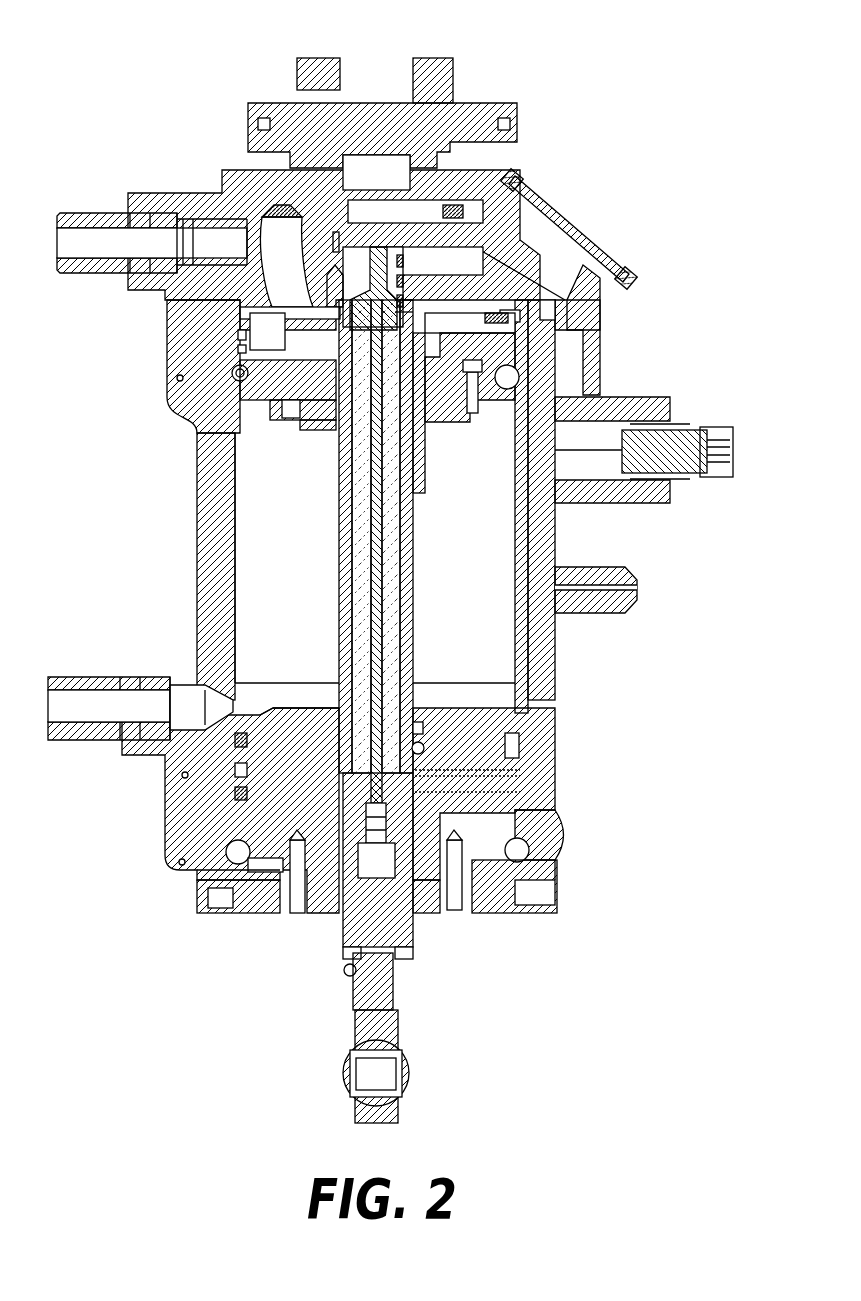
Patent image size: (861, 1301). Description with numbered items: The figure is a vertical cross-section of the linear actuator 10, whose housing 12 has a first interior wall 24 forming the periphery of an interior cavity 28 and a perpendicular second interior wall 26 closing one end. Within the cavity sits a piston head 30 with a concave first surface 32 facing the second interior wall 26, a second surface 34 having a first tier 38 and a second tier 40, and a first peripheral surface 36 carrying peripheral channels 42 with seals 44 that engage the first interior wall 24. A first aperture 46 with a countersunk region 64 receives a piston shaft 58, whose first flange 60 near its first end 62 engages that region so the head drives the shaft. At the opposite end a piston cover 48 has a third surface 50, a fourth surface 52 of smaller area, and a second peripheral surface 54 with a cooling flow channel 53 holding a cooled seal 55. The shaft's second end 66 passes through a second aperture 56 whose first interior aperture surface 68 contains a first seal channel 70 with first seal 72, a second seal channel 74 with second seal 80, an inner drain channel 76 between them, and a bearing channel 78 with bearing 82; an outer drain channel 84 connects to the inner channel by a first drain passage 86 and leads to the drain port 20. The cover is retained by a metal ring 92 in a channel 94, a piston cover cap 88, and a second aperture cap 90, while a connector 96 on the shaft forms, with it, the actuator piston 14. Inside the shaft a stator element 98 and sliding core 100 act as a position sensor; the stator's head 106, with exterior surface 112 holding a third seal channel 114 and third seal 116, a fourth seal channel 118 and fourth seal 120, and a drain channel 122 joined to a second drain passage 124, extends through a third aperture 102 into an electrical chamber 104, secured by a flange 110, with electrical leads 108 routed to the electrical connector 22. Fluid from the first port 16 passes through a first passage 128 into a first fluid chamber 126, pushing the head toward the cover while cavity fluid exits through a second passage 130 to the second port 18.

The linear actuator 10 is at (628, 172).
The housing 12 is at (210, 615).
The actuator piston 14 is at (433, 1043).
The first port 16 is at (125, 220).
The second port 18 is at (90, 680).
The drain port 20 is at (637, 583).
The electrical connector 22 is at (700, 425).
The first interior wall 24 is at (245, 560).
The second interior wall 26 is at (462, 322).
The interior cavity 28 is at (495, 630).
The piston head 30 is at (462, 398).
The first surface 32 is at (245, 348).
The second surface 34 is at (234, 470).
The first peripheral surface 36 is at (245, 352).
The first tier 38 is at (240, 423).
The second tier 40 is at (455, 415).
The peripheral channels 42 is at (282, 414).
The seals 44 is at (243, 375).
The first aperture 46 is at (290, 232).
The piston cover 48 is at (275, 840).
The third surface 50 is at (455, 712).
The fourth surface 52 is at (467, 913).
The cooling flow channel 53 is at (320, 680).
The second peripheral surface 54 is at (520, 815).
The cooled seal 55 is at (240, 748).
The second aperture 56 is at (333, 707).
The piston shaft 58 is at (343, 525).
The first flange 60 is at (432, 422).
The first end 62 is at (418, 352).
The countersunk region 64 is at (300, 433).
The second end 66 is at (338, 933).
The first interior aperture surface 68 is at (420, 792).
The first seal channel 70 is at (420, 780).
The first seal 72 is at (422, 750).
The second seal channel 74 is at (240, 795).
The inner drain channel 76 is at (236, 772).
The bearing channel 78 is at (285, 850).
The second seal 80 is at (290, 825).
The bearing 82 is at (262, 865).
The outer drain channel 84 is at (520, 773).
The first drain passage 86 is at (517, 763).
The piston cover cap 88 is at (255, 915).
The second aperture cap 90 is at (430, 923).
The metal ring 92 is at (545, 880).
The channel 94 is at (530, 852).
The connector 96 is at (370, 1075).
The stator element 98 is at (390, 580).
The sliding core 100 is at (370, 630).
The third aperture 102 is at (303, 438).
The electrical chamber 104 is at (485, 212).
The head 106 is at (395, 290).
The electrical leads 108 is at (458, 205).
The flange 110 is at (327, 300).
The exterior surface 112 is at (365, 250).
The third seal channel 114 is at (410, 312).
The third seal 116 is at (405, 300).
The fourth seal channel 118 is at (415, 262).
The fourth seal 120 is at (530, 200).
The drain channel 122 is at (335, 235).
The second drain passage 124 is at (537, 300).
The first fluid chamber 126 is at (273, 332).
The first passage 128 is at (288, 300).
The second passage 130 is at (230, 705).